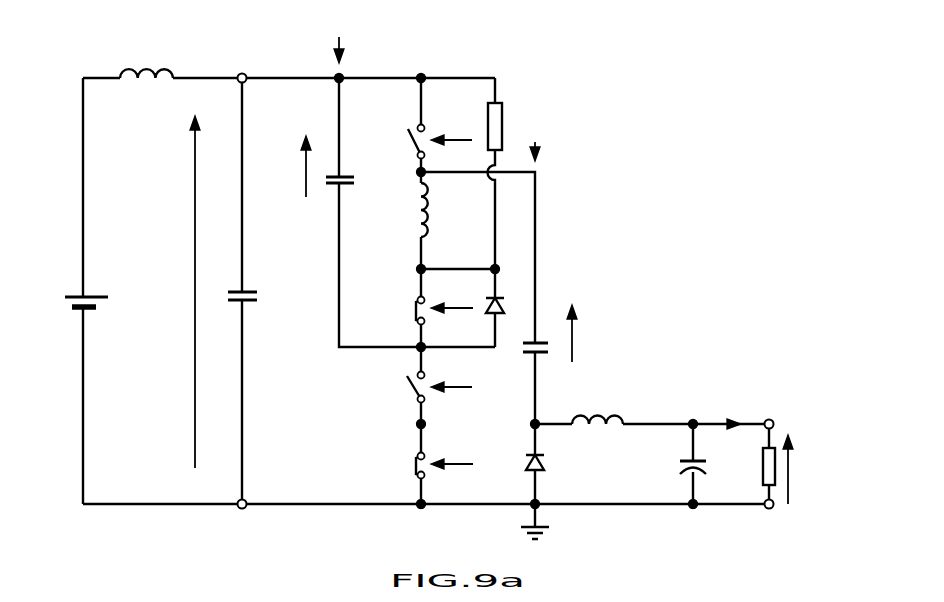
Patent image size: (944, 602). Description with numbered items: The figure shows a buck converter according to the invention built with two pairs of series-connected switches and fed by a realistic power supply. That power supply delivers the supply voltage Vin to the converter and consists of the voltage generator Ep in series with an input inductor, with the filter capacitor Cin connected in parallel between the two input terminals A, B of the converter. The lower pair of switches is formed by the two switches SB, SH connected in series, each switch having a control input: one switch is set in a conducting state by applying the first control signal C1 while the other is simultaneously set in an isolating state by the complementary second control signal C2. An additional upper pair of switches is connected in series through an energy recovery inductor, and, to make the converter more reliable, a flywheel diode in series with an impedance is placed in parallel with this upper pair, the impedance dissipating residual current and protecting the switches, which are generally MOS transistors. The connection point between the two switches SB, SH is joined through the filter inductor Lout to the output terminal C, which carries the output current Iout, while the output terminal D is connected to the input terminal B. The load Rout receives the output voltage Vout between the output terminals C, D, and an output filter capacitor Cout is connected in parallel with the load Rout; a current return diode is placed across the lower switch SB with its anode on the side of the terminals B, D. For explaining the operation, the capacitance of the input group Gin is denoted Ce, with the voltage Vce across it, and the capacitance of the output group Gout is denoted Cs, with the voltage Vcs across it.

The input terminal A is at (242, 73).
The input terminal B is at (243, 509).
The output terminal C is at (772, 418).
The output terminal D is at (540, 463).
The voltage generator Ep is at (78, 296).
The supply voltage Vin is at (180, 292).
The filter capacitor Cin is at (240, 291).
The capacitance of the input group Ce is at (334, 186).
The voltage across the input group capacitance Vce is at (290, 166).
The input group Gin is at (336, 39).
The output group Gout is at (540, 138).
The first control signal C1 is at (451, 256).
The second control signal C2 is at (452, 378).
The voltage across the output group capacitance Vcs is at (587, 333).
The capacitance of the output group Cs is at (545, 356).
The switch SH is at (410, 392).
The switch SB is at (412, 465).
The filter inductor Lout is at (598, 418).
The output current Iout is at (735, 419).
The output filter capacitor Cout is at (680, 470).
The load Rout is at (762, 471).
The output voltage Vout is at (809, 469).